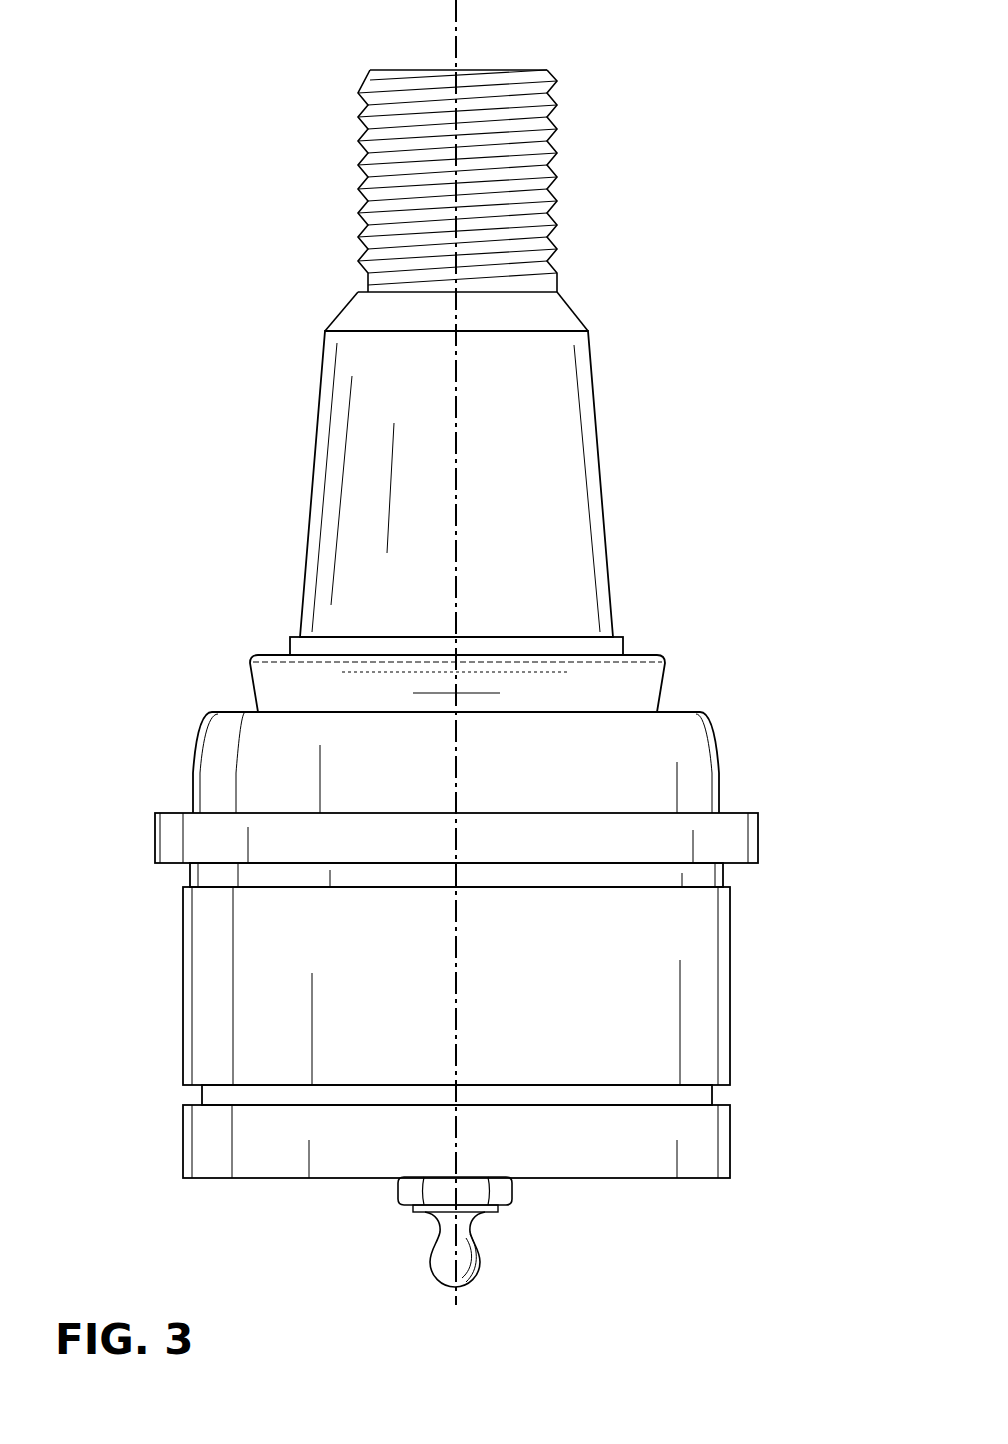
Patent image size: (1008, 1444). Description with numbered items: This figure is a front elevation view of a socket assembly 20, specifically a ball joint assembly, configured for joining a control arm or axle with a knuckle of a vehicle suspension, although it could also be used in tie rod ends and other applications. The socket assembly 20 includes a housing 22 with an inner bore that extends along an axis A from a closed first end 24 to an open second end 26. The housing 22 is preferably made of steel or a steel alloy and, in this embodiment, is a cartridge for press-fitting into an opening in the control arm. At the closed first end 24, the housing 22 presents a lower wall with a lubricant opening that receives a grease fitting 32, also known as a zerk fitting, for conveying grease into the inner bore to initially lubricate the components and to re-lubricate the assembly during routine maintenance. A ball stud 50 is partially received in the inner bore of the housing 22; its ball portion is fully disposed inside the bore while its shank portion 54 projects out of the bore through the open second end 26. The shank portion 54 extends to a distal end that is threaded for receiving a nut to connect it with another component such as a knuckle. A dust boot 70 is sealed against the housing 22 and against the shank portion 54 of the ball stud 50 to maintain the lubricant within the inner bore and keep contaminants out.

The axis A is at (457, 28).
The socket assembly 20 is at (711, 533).
The housing 22 is at (514, 879).
The closed first end 24 is at (683, 1178).
The open second end 26 is at (683, 712).
The grease fitting 32 is at (466, 1258).
The ball stud 50 is at (466, 493).
The shank portion 54 is at (365, 452).
The dust boot 70 is at (255, 677).